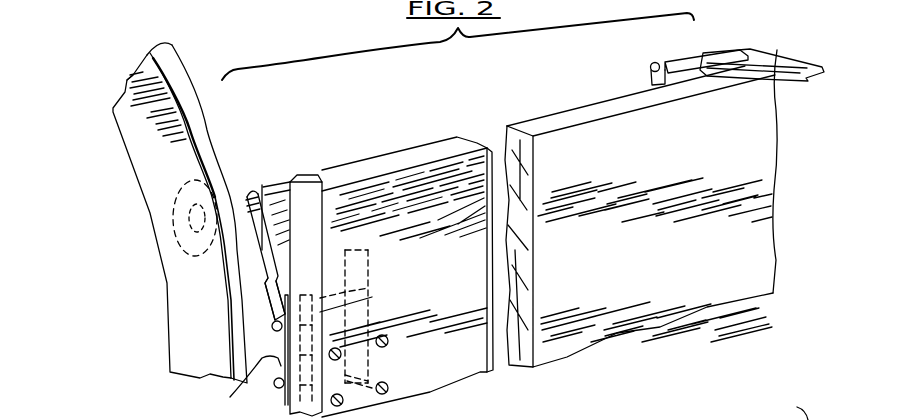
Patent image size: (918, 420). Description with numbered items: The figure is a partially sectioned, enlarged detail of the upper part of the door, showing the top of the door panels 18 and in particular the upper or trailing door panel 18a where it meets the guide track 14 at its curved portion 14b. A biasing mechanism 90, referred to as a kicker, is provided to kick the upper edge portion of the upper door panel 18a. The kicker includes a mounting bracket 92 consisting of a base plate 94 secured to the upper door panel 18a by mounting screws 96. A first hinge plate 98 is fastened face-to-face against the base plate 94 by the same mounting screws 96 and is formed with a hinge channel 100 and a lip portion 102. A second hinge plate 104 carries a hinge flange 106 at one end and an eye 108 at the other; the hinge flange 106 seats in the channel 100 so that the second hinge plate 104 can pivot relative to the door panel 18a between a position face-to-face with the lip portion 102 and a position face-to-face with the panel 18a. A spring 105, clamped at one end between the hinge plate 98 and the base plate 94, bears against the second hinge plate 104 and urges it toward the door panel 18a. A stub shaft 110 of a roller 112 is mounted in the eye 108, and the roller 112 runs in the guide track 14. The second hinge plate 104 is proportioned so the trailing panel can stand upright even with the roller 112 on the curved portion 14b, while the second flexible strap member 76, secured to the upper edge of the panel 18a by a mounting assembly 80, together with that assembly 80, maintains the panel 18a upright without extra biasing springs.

The guide track 14 is at (150, 196).
The curved portion 14b is at (150, 156).
The roller 112 is at (175, 223).
The second hinge plate 104 is at (263, 257).
The eye 108 is at (242, 193).
The lip portion 102 is at (263, 293).
The hinge channel 100 is at (272, 331).
The first hinge plate 98 is at (247, 391).
The mounting bracket 92 is at (277, 397).
The biasing mechanism 90 is at (277, 147).
The stub shaft 110 is at (263, 185).
The spring 105 is at (280, 187).
The base plate 94 is at (372, 283).
The hinge flange 106 is at (369, 296).
The mounting screws 96 is at (381, 385).
The door panels 18 is at (671, 419).
The upper door panel 18a is at (590, 133).
The mounting assembly 80 is at (641, 66).
The second flexible strap member 76 is at (777, 62).